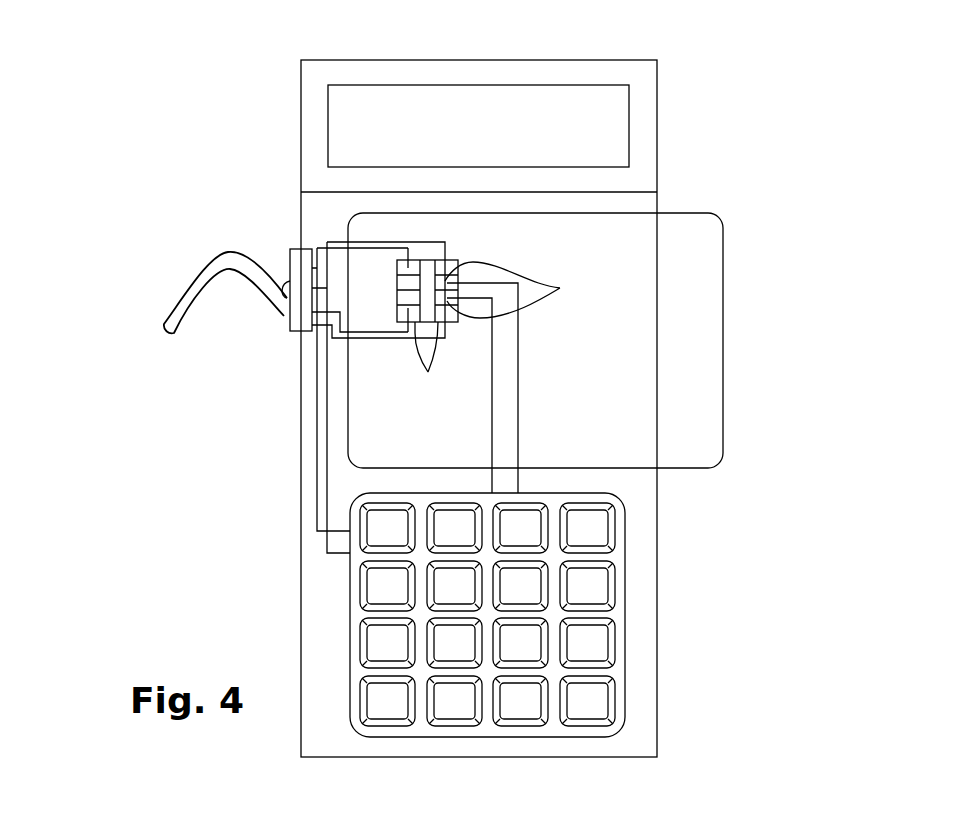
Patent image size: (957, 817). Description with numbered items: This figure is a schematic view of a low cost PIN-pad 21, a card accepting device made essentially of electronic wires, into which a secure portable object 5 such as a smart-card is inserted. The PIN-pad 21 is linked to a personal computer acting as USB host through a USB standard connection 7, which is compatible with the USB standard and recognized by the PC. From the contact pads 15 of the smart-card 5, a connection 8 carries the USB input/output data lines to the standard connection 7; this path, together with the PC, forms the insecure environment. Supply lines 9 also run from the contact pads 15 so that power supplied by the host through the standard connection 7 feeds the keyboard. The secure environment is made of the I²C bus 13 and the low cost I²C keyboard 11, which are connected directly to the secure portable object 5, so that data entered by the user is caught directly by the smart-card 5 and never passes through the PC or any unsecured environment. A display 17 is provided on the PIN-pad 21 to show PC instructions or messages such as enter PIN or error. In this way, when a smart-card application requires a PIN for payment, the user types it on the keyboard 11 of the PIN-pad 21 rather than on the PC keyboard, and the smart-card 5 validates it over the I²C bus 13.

The PIN-pad 21 is at (238, 84).
The display 17 is at (603, 119).
The portable object 5 is at (697, 285).
The USB standard connection 7 is at (190, 287).
The connection 8 is at (373, 350).
The supply lines 9 is at (310, 425).
The contact pads 15 is at (460, 252).
The I²C bus 13 is at (524, 378).
The I²C keyboard 11 is at (617, 587).